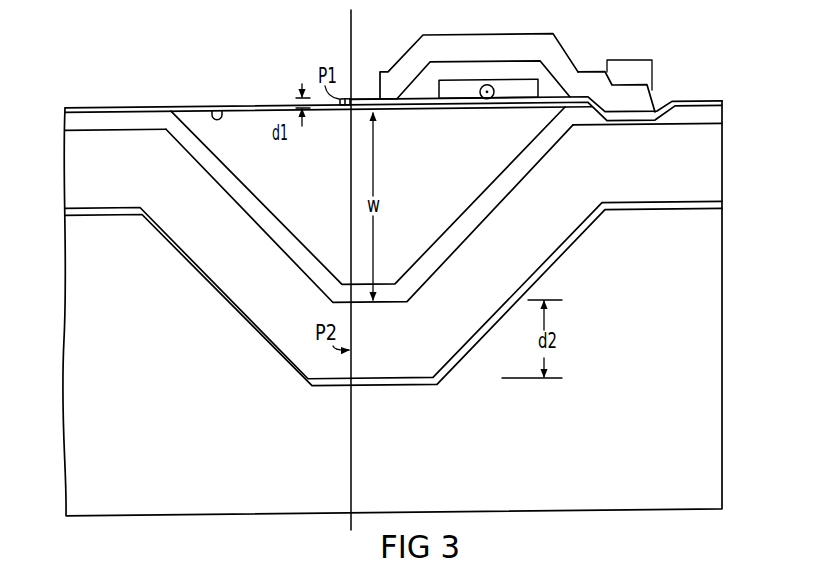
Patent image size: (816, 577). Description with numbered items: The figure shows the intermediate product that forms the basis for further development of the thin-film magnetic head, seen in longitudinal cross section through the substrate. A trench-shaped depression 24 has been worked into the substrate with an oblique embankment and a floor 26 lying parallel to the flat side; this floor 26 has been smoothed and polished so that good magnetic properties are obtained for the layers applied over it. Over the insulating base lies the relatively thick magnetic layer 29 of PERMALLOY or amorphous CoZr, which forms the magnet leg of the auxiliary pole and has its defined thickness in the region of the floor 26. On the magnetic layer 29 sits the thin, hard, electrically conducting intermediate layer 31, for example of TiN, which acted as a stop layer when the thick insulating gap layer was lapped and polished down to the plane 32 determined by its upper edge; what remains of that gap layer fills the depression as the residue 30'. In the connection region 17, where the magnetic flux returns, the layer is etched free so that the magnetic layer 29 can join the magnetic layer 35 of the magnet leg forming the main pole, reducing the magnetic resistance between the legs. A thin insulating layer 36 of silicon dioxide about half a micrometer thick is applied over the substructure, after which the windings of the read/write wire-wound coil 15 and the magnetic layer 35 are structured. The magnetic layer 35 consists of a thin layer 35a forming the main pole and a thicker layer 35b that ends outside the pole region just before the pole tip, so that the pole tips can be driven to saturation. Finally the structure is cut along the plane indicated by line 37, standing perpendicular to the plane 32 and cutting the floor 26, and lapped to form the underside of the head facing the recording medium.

The read/write wire-wound coil 15 is at (468, 96).
The connection region 17 is at (628, 60).
The depression 24 is at (233, 307).
The floor 26 is at (405, 386).
The magnetic layer 29 is at (715, 152).
The residue of the insulating layer 30' is at (369, 214).
The intermediate layer 31 is at (501, 177).
The plane 32 is at (213, 110).
The magnetic layer 35 is at (503, 24).
The thin layer 35a is at (363, 97).
The thicker layer 35b is at (561, 58).
The thin layer comprising electrical insulation 36 is at (239, 107).
The line 37 is at (350, 31).